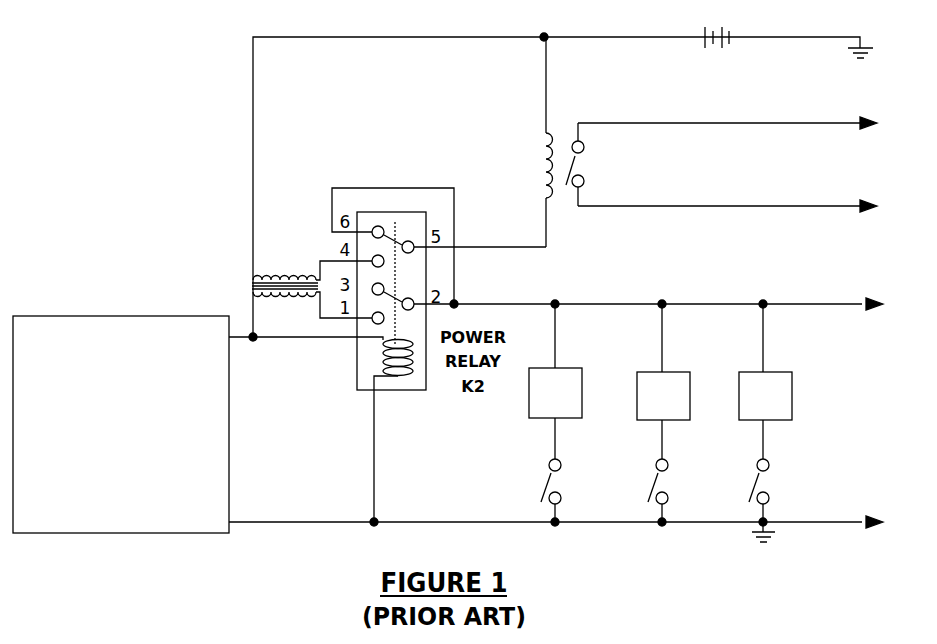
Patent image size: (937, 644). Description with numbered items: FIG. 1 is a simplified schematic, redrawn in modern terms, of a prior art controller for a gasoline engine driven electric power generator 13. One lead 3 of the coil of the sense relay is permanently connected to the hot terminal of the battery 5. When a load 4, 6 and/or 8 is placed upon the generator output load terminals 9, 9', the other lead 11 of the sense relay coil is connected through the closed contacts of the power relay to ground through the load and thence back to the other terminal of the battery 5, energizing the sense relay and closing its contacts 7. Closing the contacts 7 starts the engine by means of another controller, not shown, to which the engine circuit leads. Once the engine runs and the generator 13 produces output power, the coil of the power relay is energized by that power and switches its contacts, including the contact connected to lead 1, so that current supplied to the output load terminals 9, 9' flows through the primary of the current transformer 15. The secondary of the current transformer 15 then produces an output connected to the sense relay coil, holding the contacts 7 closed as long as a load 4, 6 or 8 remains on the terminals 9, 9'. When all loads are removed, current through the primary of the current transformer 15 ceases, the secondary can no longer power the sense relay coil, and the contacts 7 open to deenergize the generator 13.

The lead 1 is at (250, 86).
The lead of the coil of relay K1 3 is at (534, 99).
The battery 5 is at (708, 55).
The contacts of relay K1 7 is at (587, 162).
The generator output load terminal 9 is at (656, 294).
The generator output load terminal 9' is at (639, 527).
The lead of the coil of relay K1 11 is at (548, 235).
The generator 13 is at (229, 415).
The current transformer 15 is at (250, 282).
The load 4 is at (555, 413).
The load 6 is at (663, 413).
The load 8 is at (765, 413).